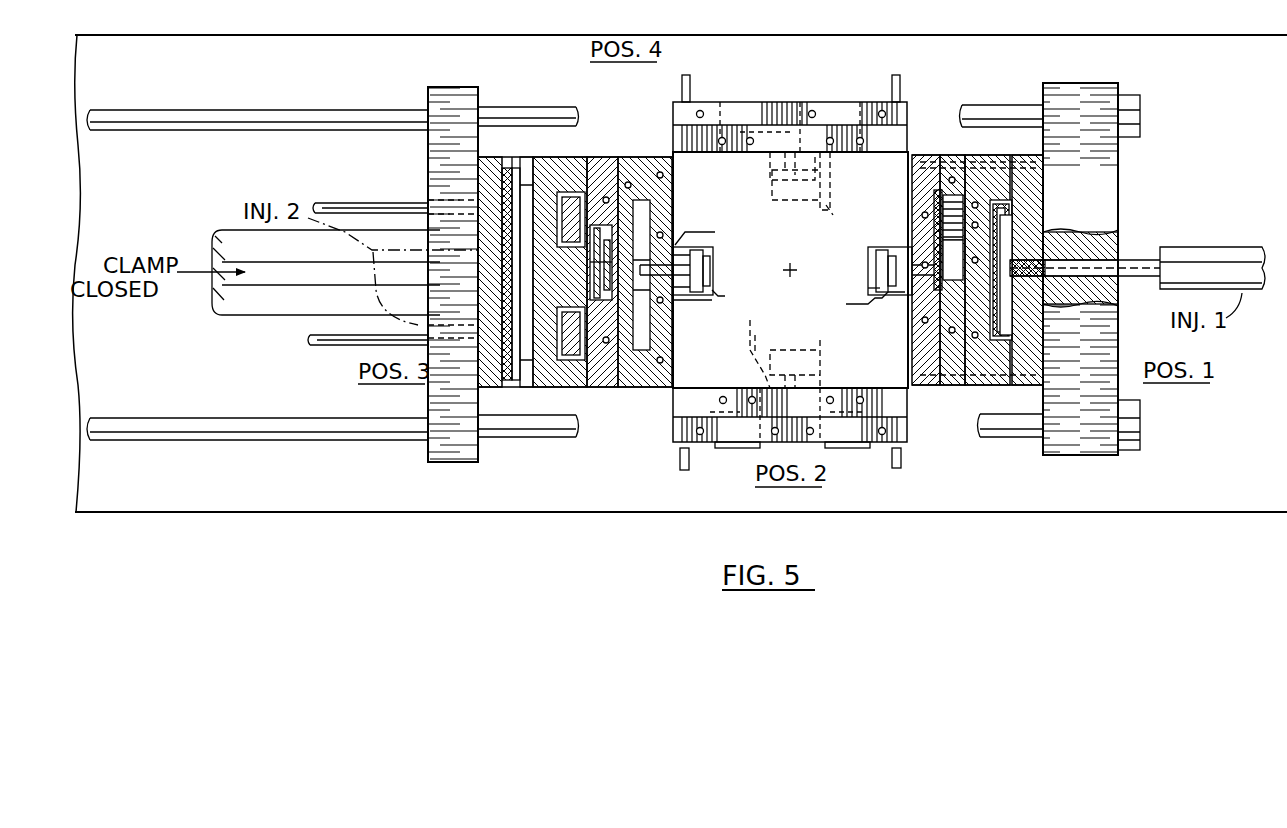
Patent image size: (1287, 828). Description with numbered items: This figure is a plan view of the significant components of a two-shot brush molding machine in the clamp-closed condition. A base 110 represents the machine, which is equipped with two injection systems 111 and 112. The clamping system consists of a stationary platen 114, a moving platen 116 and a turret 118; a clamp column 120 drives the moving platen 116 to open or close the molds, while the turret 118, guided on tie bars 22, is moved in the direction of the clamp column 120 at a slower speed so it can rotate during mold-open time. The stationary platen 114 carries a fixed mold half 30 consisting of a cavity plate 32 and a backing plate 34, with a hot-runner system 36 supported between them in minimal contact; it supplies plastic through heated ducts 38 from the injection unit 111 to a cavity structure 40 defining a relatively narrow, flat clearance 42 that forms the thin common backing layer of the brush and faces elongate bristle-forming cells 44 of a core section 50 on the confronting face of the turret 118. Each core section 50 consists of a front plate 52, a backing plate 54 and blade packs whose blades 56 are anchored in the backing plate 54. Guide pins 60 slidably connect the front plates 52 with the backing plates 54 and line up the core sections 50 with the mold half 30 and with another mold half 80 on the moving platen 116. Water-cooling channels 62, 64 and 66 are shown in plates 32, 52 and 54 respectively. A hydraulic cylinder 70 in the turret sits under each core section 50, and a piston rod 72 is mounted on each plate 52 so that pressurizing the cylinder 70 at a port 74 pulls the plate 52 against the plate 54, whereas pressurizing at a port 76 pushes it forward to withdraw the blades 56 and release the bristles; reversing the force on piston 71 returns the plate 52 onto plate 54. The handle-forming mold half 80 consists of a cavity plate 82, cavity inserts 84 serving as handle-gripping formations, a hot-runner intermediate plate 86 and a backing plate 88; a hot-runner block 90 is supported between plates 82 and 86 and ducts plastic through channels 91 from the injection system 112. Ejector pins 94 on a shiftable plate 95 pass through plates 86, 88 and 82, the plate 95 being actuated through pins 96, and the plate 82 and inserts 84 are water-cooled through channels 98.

The tie bars 22 is at (140, 116).
The fixed mold half 30 is at (974, 402).
The cavity plate 32 is at (1000, 365).
The backing plate 34 is at (1036, 365).
The hot-runner system 36 is at (1020, 342).
The heated ducts 38 is at (1025, 310).
The cavity structure 40 is at (1000, 180).
The flat clearance 42 is at (1020, 232).
The bristle-forming cells 44 is at (1025, 168).
The core section 50 is at (942, 130).
The front plate 52 is at (947, 170).
The backing plate 54 is at (927, 170).
The blades 56 is at (920, 210).
The guide pins 60 is at (893, 460).
The water-cooling channels 62 is at (1008, 200).
The water-cooling channels 64 is at (956, 365).
The water-cooling channels 66 is at (915, 345).
The hydraulic cylinder 70 is at (872, 270).
The piston 71 is at (876, 260).
The piston rod 72 is at (893, 262).
The port 74 is at (718, 237).
The port 76 is at (868, 290).
The handle-forming mold half 80 is at (545, 152).
The cavity plate 82 is at (636, 172).
The cavity inserts 84 is at (600, 185).
The hot-runner intermediate plate 86 is at (560, 178).
The backing plate 88 is at (520, 185).
The hot-runner block 90 is at (575, 352).
The channels 91 is at (600, 340).
The ejector pins 94 is at (500, 190).
The shiftable plate 95 is at (505, 175).
The pins 96 is at (372, 210).
The water-cooling channels 98 is at (610, 362).
The base 110 is at (1220, 490).
The injection unit 111 is at (1222, 258).
The injection system 112 is at (418, 326).
The stationary platen 114 is at (1080, 430).
The moving platen 116 is at (453, 440).
The turret 118 is at (697, 373).
The clamp column 120 is at (250, 298).